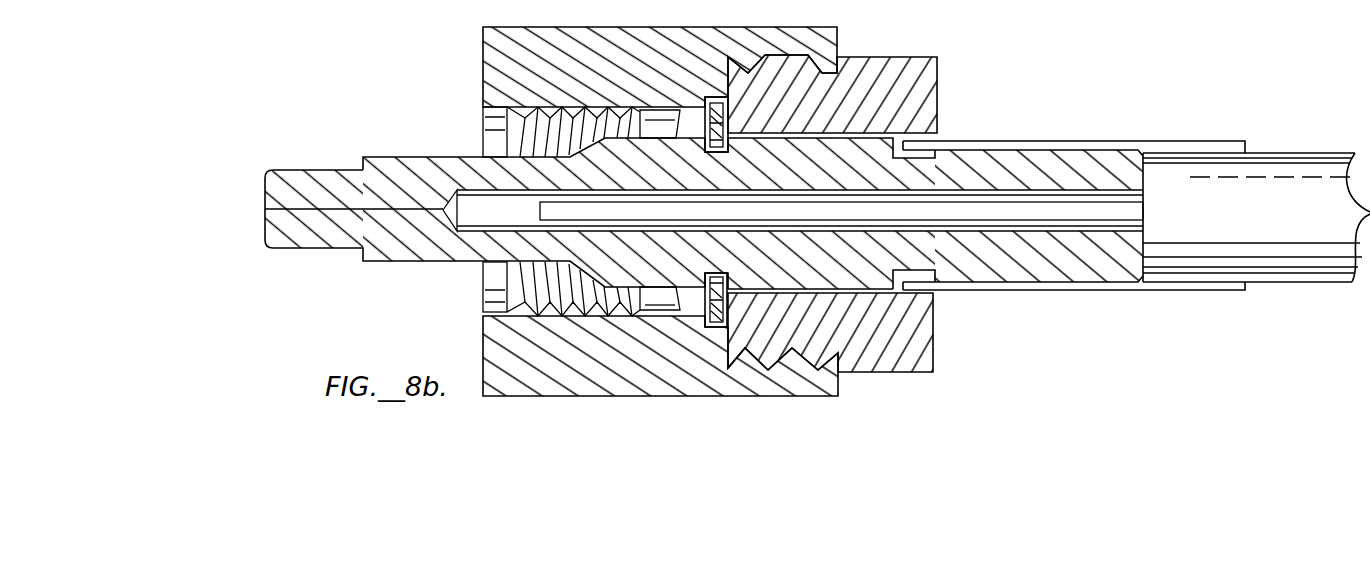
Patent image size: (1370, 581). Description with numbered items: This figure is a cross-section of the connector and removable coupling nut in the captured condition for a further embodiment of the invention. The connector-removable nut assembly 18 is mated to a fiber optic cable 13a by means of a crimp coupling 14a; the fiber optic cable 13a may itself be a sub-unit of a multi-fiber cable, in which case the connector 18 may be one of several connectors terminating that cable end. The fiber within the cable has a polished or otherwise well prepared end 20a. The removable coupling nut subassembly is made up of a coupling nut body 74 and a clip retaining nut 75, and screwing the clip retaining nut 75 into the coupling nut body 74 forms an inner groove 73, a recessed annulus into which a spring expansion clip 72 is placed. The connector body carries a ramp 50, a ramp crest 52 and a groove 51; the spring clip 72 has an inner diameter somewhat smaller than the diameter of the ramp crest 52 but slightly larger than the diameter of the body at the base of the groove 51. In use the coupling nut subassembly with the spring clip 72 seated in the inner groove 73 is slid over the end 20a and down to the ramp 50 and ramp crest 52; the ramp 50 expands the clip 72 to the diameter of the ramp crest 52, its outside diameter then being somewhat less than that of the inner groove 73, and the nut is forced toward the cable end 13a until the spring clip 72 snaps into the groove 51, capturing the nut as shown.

The fiber optic cable 13a is at (1303, 152).
The crimp coupling 14a is at (1068, 290).
The connector-removable nut assembly 18 is at (911, 27).
The fiber end 20a is at (265, 208).
The ramp 50 is at (568, 263).
The groove 51 is at (722, 283).
The ramp crest 52 is at (505, 301).
The spring expansion clip 72 is at (714, 97).
The inner groove 73 is at (712, 330).
The coupling nut body 74 is at (639, 27).
The clip retaining nut 75 is at (938, 76).